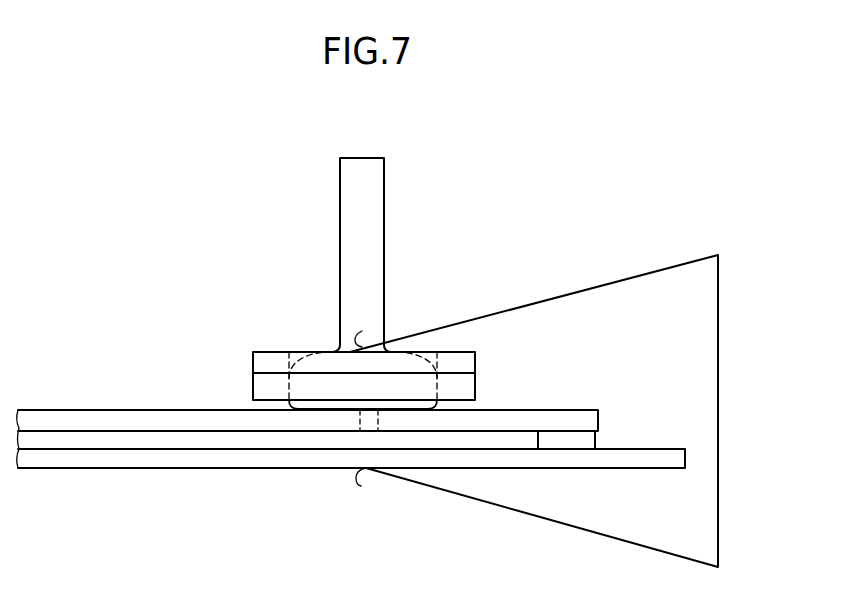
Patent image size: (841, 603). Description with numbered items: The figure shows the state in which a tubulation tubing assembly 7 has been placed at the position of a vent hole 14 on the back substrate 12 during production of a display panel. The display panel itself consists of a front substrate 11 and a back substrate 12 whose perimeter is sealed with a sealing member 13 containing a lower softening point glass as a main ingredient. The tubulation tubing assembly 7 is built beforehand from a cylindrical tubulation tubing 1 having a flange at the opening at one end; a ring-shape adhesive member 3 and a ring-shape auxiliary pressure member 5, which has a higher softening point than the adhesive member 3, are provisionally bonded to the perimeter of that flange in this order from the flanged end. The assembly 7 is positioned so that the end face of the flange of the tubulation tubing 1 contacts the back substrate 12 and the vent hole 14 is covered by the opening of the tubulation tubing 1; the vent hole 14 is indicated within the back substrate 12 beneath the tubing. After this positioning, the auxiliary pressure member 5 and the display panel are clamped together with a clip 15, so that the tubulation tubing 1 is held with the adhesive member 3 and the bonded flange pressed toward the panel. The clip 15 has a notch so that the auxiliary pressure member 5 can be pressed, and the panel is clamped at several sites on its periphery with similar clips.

The tubulation tubing 1 is at (350, 232).
The adhesive member 3 is at (475, 388).
The auxiliary pressure member 5 is at (475, 358).
The tubulation tubing assembly 7 is at (296, 313).
The front substrate 11 is at (137, 458).
The back substrate 12 is at (116, 417).
The sealing member 13 is at (595, 437).
The vent hole 14 is at (358, 421).
The clip 15 is at (719, 410).